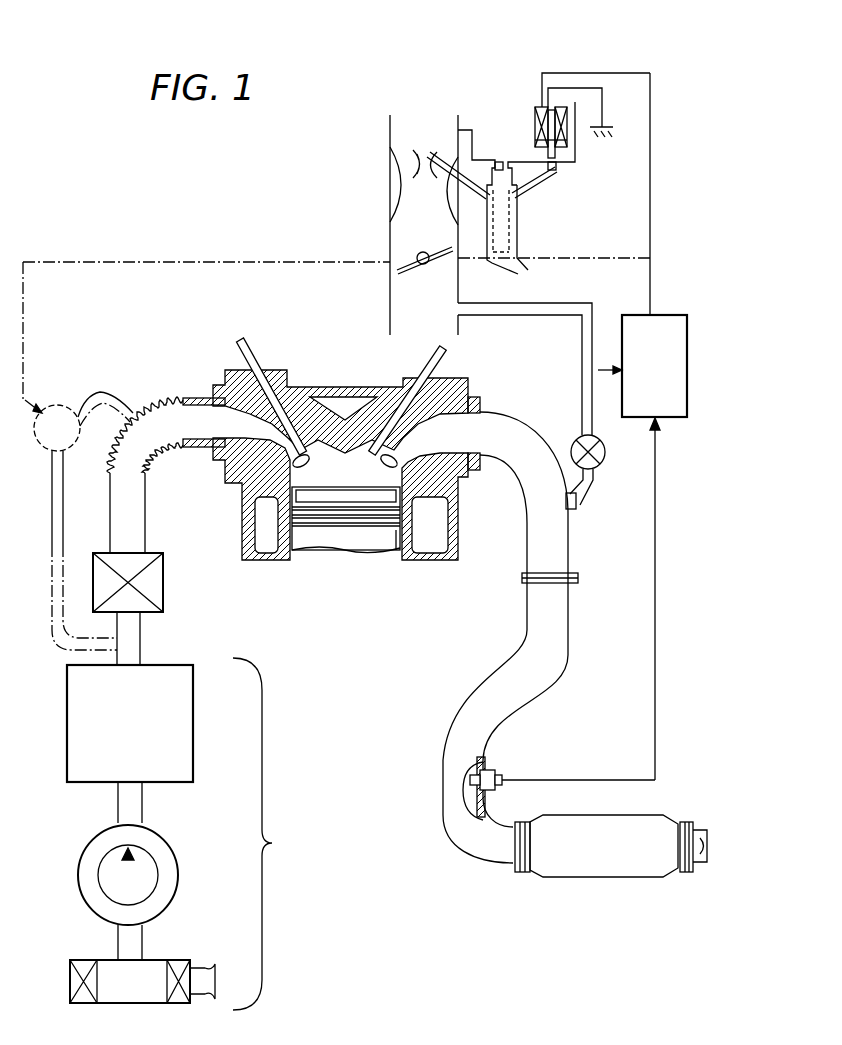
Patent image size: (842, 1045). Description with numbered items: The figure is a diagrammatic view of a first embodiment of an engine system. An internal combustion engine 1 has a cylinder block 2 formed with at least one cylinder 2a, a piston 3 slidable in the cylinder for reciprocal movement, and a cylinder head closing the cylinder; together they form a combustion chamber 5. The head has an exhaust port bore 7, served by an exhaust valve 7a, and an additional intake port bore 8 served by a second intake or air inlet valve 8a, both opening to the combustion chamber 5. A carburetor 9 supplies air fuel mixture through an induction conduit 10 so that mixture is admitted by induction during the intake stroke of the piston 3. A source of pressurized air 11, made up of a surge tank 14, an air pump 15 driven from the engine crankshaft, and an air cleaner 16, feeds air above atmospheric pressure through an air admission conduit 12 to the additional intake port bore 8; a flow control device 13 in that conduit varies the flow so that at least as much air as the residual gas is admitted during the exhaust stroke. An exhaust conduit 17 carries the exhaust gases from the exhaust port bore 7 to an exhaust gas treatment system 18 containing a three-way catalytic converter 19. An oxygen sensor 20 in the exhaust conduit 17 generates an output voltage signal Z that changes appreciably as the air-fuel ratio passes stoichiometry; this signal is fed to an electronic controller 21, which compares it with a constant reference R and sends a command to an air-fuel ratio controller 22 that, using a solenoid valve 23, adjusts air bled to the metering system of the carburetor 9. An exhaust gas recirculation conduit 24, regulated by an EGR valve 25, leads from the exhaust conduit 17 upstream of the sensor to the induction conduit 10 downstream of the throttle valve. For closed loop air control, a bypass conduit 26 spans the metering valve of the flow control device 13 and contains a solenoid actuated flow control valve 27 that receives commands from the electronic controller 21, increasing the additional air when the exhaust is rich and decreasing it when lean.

The internal combustion engine 1 is at (472, 543).
The cylinder block 2 is at (462, 503).
The cylinder 2a is at (398, 540).
The piston 3 is at (332, 540).
The combustion chamber 5 is at (346, 476).
The exhaust port bore 7 is at (443, 392).
The exhaust valve 7a is at (378, 438).
The additional intake port bore 8 is at (245, 378).
The air inlet valve 8a is at (300, 447).
The carburetor 9 is at (382, 180).
The induction conduit 10 is at (420, 295).
The source of pressurized air 11 is at (300, 860).
The air admission conduit 12 is at (145, 455).
The flow control device 13 is at (165, 582).
The surge tank 14 is at (193, 712).
The air pump 15 is at (173, 842).
The air cleaner 16 is at (157, 957).
The exhaust conduit 17 is at (520, 447).
The exhaust gas treatment system 18 is at (549, 890).
The three-way catalytic converter 19 is at (603, 868).
The oxygen sensor 20 is at (488, 767).
The electronic controller 21 is at (637, 313).
The air-fuel ratio controller 22 is at (511, 97).
The solenoid valve 23 is at (535, 127).
The exhaust gas recirculation conduit 24 is at (594, 497).
The EGR valve 25 is at (605, 456).
The bypass conduit 26 is at (64, 480).
The solenoid actuated flow control valve 27 is at (58, 405).
The reference R is at (697, 358).
The output voltage signal Z is at (587, 778).